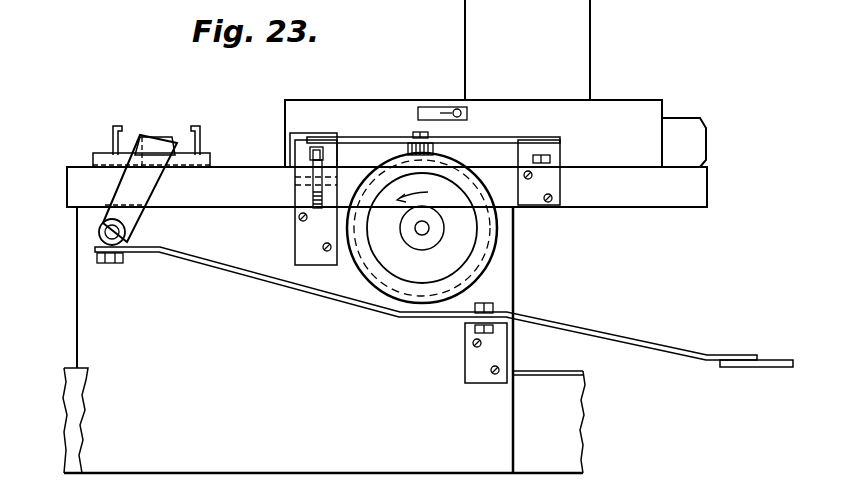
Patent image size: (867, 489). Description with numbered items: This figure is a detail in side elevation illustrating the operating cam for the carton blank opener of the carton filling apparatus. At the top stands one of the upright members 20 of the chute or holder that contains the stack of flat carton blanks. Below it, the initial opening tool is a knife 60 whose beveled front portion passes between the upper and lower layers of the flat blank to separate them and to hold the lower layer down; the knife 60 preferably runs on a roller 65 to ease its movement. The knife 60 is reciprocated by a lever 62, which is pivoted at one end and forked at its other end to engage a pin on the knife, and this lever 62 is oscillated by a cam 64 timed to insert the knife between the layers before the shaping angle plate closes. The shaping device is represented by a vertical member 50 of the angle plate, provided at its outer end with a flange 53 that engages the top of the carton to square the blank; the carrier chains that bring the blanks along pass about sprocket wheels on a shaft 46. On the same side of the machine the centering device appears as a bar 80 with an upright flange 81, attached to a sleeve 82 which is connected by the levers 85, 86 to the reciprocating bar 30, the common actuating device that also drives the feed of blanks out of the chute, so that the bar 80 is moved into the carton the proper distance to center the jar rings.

The upright member 20 is at (568, 50).
The reciprocating bar 30 is at (572, 370).
The shaft 46 is at (420, 232).
The vertical member 50 is at (110, 140).
The flange 53 is at (198, 128).
The knife 60 is at (298, 152).
The lever 62 is at (384, 140).
The cam 64 is at (483, 253).
The roller 65 is at (300, 208).
The bar 80 is at (150, 198).
The upright flange 81 is at (151, 171).
The sleeve 82 is at (133, 230).
The lever 85 is at (577, 328).
The lever 86 is at (777, 370).